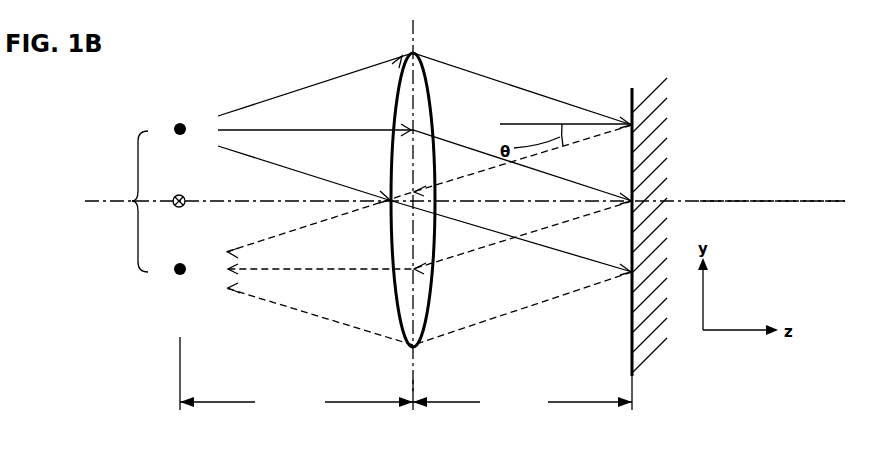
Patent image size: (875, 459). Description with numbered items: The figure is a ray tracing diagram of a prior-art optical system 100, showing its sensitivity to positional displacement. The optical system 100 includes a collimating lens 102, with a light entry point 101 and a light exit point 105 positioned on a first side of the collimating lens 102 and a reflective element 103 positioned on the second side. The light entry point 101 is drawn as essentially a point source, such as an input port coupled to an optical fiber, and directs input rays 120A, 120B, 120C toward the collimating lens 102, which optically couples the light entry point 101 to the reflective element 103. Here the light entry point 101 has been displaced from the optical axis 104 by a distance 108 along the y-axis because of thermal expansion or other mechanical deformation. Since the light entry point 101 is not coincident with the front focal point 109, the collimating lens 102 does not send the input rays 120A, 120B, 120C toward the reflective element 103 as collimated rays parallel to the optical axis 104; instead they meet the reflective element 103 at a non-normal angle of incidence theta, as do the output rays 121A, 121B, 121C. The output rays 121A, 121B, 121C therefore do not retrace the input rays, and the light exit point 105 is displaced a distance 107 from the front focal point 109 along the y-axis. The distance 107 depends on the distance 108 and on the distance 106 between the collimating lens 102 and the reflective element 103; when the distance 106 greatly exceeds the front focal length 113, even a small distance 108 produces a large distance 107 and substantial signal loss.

The optical system 100 is at (258, 42).
The light entry point 101 is at (175, 129).
The collimating lens 102 is at (410, 53).
The reflective element 103 is at (632, 98).
The optical axis 104 is at (798, 201).
The light exit point 105 is at (175, 269).
The distance between collimating lens and reflective element 106 is at (522, 395).
The distance of light exit point from front focal point 107 is at (136, 237).
The distance of light entry point from optical axis 108 is at (136, 165).
The front focal point 109 is at (188, 198).
The front focal length 113 is at (296, 375).
The input ray 120A is at (303, 89).
The input ray 120B is at (303, 130).
The input ray 120C is at (300, 172).
The output ray 121A is at (458, 180).
The output ray 121B is at (455, 258).
The output ray 121C is at (485, 325).